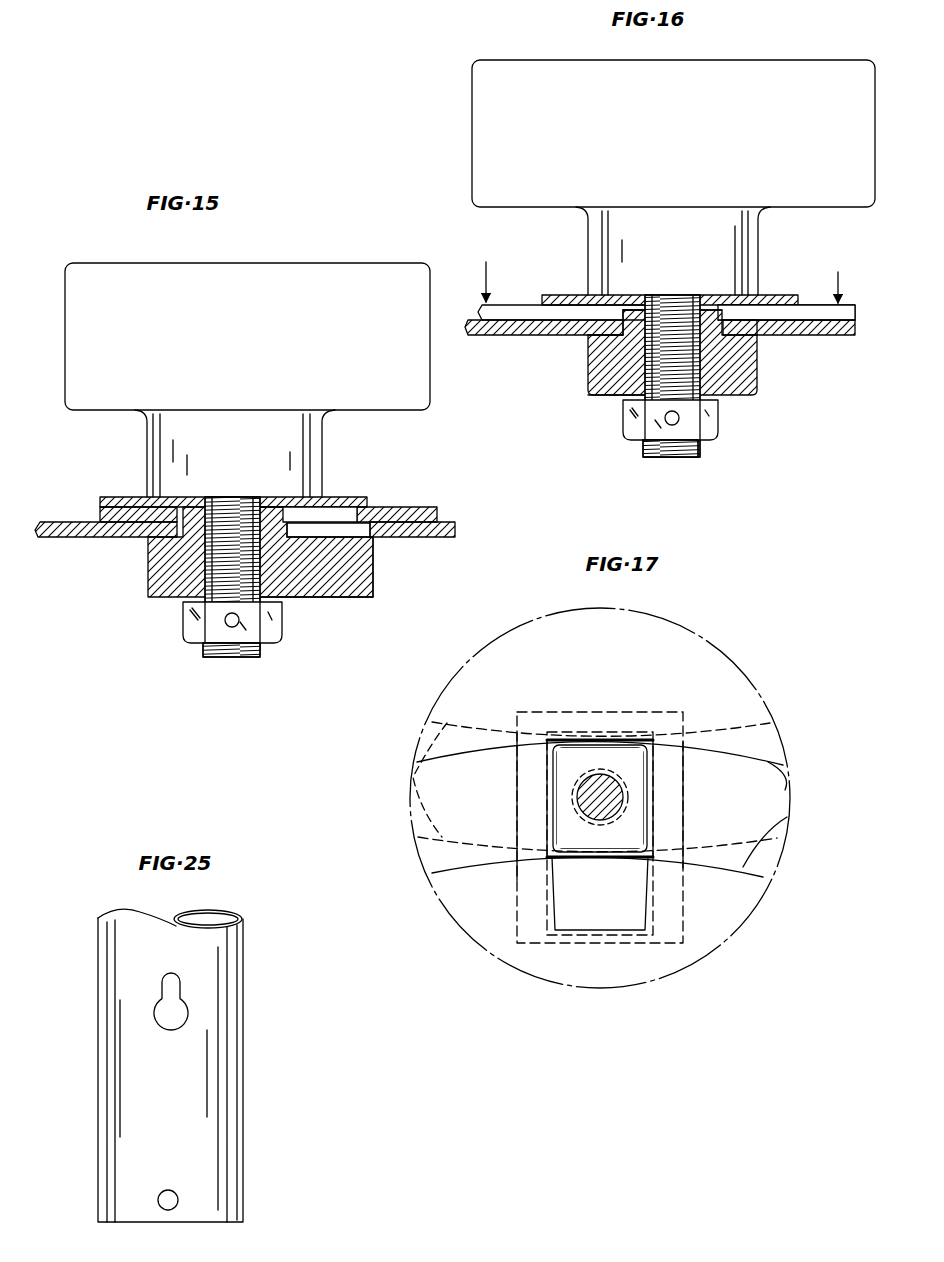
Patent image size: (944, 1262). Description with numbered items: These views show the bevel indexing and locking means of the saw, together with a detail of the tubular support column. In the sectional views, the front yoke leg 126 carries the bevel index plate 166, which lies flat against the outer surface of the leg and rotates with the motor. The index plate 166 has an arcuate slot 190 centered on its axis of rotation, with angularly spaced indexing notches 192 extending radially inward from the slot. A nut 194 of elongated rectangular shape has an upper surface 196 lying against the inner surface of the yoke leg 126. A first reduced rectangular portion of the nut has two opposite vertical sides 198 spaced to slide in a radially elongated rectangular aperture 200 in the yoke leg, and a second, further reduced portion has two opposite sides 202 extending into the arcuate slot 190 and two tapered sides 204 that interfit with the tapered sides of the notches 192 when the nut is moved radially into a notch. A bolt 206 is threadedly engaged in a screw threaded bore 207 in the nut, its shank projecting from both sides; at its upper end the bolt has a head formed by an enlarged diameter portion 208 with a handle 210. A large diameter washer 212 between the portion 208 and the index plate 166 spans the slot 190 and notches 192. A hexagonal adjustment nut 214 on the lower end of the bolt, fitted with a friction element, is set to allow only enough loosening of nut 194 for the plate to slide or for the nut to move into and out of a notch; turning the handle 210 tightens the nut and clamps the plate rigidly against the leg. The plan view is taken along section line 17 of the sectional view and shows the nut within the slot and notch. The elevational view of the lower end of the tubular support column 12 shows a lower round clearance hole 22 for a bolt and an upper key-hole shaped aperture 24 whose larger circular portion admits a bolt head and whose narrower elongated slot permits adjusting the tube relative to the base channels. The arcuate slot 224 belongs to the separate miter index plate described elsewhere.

In FIG. 25, the tubular support column 12 is at (241, 1020).
In FIG. 16, the section line 17— 17 is at (662, 272).
In FIG. 25, the round clearance hole 22 is at (163, 1191).
In FIG. 25, the key-hole shaped aperture 24 is at (170, 1030).
In FIG. 15, the yoke leg 126 is at (430, 538).
In FIG. 16, the yoke leg 126 is at (850, 336).
In FIG. 15, the bevel index plate 166 is at (407, 507).
In FIG. 16, the bevel index plate 166 is at (852, 307).
In FIG. 17, the arcuate slot 190 is at (785, 818).
In FIG. 17, the indexing notch 192 is at (647, 907).
In FIG. 15, the nut 194 is at (150, 597).
In FIG. 16, the nut 194 is at (760, 376).
In FIG. 17, the nut 194 is at (515, 772).
In FIG. 15, the upper surface 196 is at (353, 528).
In FIG. 16, the upper surface 196 is at (748, 343).
In FIG. 16, the vertical sides 198 is at (612, 328).
In FIG. 17, the vertical sides 198 is at (547, 798).
In FIG. 15, the rectangular aperture 200 is at (373, 563).
In FIG. 16, the rectangular aperture 200 is at (598, 352).
In FIG. 17, the rectangular aperture 200 is at (633, 733).
In FIG. 15, the opposite sides 202 is at (297, 517).
In FIG. 17, the opposite sides 202 is at (617, 748).
In FIG. 16, the tapered sides 204 is at (718, 313).
In FIG. 17, the tapered sides 204 is at (547, 828).
In FIG. 15, the bolt 206 is at (210, 657).
In FIG. 16, the bolt 206 is at (698, 453).
In FIG. 17, the bolt 206 is at (606, 800).
In FIG. 15, the screw threaded bore 207 is at (260, 567).
In FIG. 16, the screw threaded bore 207 is at (672, 376).
In FIG. 15, the enlarged diameter portion 208 is at (322, 452).
In FIG. 16, the enlarged diameter portion 208 is at (758, 252).
In FIG. 15, the handle 210 is at (323, 262).
In FIG. 16, the handle 210 is at (472, 158).
In FIG. 15, the washer 212 is at (330, 495).
In FIG. 16, the washer 212 is at (758, 293).
In FIG. 15, the hexagonal adjustment nut 214 is at (270, 645).
In FIG. 16, the hexagonal adjustment nut 214 is at (720, 420).
In FIG. 17, the arcuate slot 224 is at (413, 780).